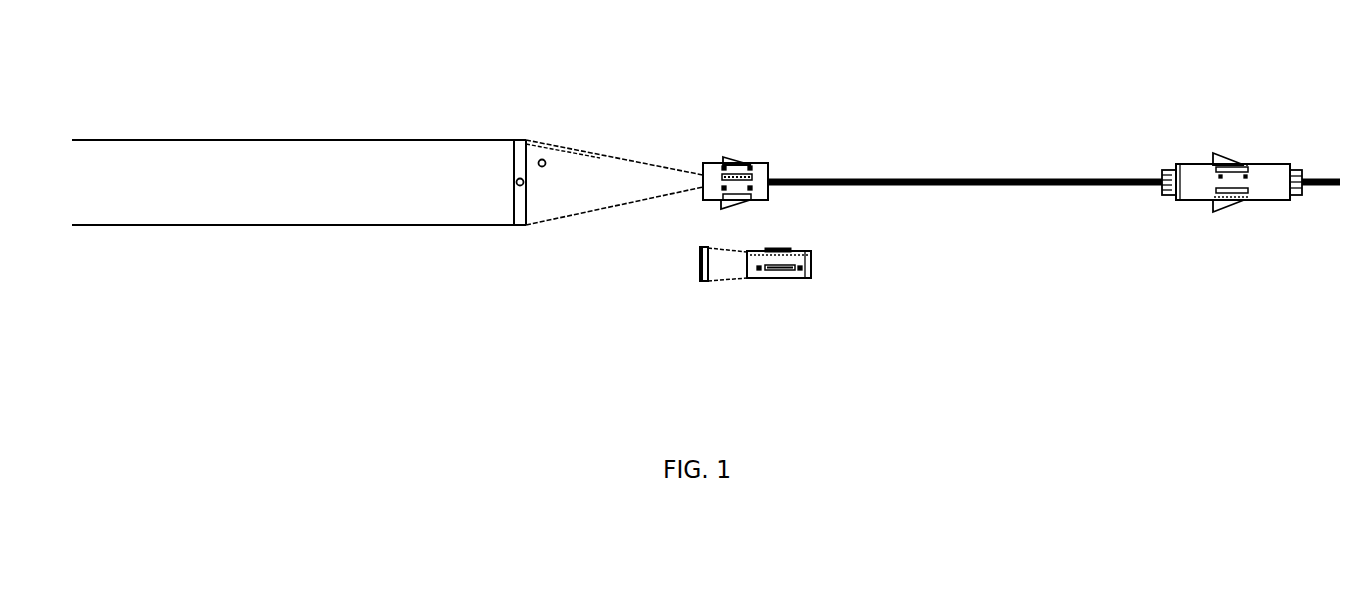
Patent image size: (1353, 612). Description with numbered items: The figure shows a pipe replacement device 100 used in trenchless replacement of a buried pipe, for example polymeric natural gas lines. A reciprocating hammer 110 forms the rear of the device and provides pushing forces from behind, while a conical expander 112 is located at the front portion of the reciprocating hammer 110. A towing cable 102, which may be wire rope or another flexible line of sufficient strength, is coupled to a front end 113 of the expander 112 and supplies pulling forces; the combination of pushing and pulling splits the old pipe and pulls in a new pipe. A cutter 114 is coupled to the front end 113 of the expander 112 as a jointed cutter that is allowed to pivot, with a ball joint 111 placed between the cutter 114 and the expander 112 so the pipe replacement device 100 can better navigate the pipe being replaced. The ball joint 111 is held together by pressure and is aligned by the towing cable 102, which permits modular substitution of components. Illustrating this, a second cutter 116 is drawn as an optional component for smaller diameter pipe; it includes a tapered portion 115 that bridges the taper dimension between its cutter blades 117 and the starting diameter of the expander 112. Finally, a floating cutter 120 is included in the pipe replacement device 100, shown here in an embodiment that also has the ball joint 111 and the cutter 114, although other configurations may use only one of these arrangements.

The pipe replacement device 100 is at (800, 400).
The towing cable 102 is at (906, 178).
The reciprocating hammer 110 is at (350, 185).
The ball joint 111 is at (700, 190).
The expander 112 is at (608, 165).
The front end 113 is at (711, 163).
The cutter 114 is at (730, 172).
The tapered portion 115 is at (733, 273).
The second cutter 116 is at (716, 266).
The cutter blades 117 is at (775, 251).
The floating cutter 120 is at (1192, 178).